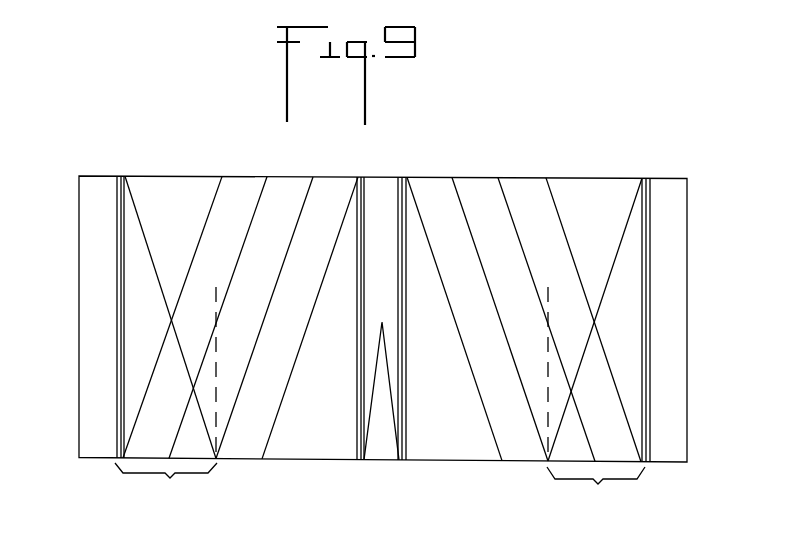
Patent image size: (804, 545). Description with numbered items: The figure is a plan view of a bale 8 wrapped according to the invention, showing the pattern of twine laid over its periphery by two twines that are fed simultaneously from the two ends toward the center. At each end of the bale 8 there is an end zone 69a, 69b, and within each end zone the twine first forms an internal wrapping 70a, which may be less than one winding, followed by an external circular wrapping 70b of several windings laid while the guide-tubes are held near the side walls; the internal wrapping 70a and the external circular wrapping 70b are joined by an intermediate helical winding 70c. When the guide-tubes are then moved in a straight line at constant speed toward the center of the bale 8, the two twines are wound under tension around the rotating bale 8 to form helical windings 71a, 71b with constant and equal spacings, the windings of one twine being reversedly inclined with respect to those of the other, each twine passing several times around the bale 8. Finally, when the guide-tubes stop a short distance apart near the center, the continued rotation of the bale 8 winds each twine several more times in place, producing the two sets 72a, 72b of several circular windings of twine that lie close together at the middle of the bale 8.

The bale 8 is at (668, 310).
The end zone 69a is at (596, 490).
The end zone 69b is at (166, 485).
The internal wrapping 70a is at (216, 350).
The external circular wrapping 70b is at (118, 382).
The intermediate helical winding 70c is at (137, 210).
The helical winding 71a is at (467, 218).
The helical winding 71b is at (297, 222).
The set of circular windings 72a is at (433, 403).
The set of circular windings 72b is at (357, 398).